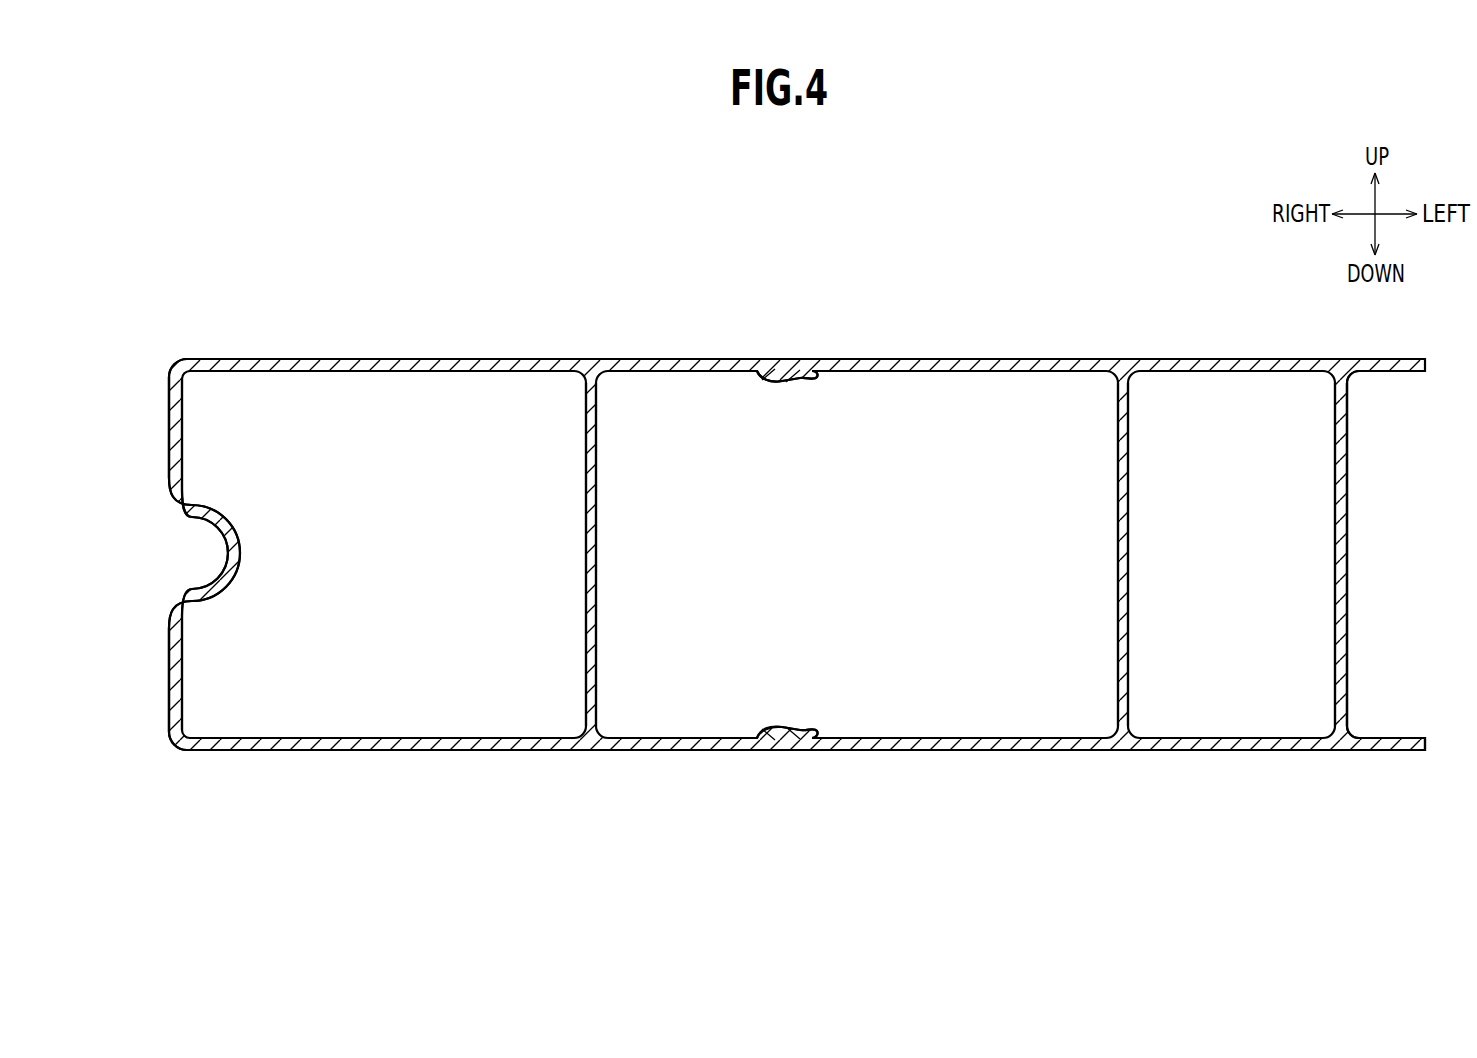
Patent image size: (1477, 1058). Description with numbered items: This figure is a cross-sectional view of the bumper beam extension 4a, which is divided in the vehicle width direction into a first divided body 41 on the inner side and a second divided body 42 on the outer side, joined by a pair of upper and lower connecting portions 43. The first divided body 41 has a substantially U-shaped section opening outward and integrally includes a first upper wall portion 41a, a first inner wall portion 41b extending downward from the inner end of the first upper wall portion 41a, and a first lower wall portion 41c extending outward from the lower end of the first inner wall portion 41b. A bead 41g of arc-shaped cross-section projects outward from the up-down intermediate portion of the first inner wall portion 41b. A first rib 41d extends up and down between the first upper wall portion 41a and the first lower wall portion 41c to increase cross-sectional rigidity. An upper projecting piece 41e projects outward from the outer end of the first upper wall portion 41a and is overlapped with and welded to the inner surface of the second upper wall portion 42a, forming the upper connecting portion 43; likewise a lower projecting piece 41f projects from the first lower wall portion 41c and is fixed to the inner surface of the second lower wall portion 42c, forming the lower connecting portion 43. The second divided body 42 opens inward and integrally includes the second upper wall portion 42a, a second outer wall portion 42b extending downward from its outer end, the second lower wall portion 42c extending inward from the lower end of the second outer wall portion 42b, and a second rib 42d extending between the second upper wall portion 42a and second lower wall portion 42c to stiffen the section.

The bumper beam extension 4a is at (1084, 327).
The first divided body 41 is at (680, 337).
The first upper wall portion 41a is at (360, 358).
The first inner wall portion 41b is at (172, 435).
The first lower wall portion 41c is at (365, 750).
The first rib 41d is at (586, 545).
The upper projecting piece 41e is at (781, 383).
The lower projecting piece 41f is at (781, 727).
The bead 41g is at (232, 553).
The second divided body 42 is at (949, 343).
The second upper wall portion 42a is at (1222, 358).
The second outer wall portion 42b is at (1347, 548).
The second lower wall portion 42c is at (1232, 750).
The second rib 42d is at (1128, 548).
The connecting portion 43 is at (800, 359).